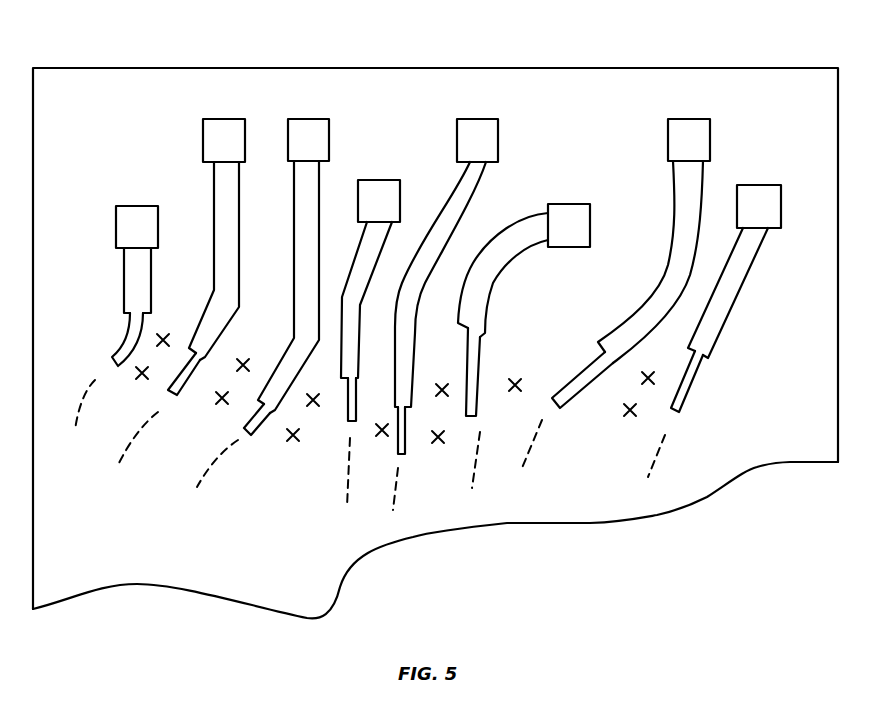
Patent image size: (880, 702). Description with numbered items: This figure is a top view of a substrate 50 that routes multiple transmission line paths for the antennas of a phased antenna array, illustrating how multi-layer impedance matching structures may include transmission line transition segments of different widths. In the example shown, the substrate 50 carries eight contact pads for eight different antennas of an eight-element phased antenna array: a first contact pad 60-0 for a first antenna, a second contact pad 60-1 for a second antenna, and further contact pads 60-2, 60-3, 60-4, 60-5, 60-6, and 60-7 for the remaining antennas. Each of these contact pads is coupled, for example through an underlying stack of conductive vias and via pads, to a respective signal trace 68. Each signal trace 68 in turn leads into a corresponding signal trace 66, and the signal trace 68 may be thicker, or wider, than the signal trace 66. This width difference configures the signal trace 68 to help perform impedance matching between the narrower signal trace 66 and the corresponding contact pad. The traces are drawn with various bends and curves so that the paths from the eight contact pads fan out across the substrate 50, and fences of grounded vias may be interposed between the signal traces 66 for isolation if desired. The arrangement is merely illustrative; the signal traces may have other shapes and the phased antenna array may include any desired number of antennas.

The substrate 50 is at (541, 75).
The first contact pad 60-0 is at (137, 215).
The second contact pad 60-1 is at (222, 135).
The contact pad 60-2 is at (306, 132).
The contact pad 60-3 is at (376, 197).
The contact pad 60-4 is at (485, 137).
The contact pad 60-5 is at (577, 212).
The contact pad 60-6 is at (686, 135).
The contact pad 60-7 is at (757, 200).
The signal trace 66 is at (112, 340).
The signal trace 68 is at (124, 275).